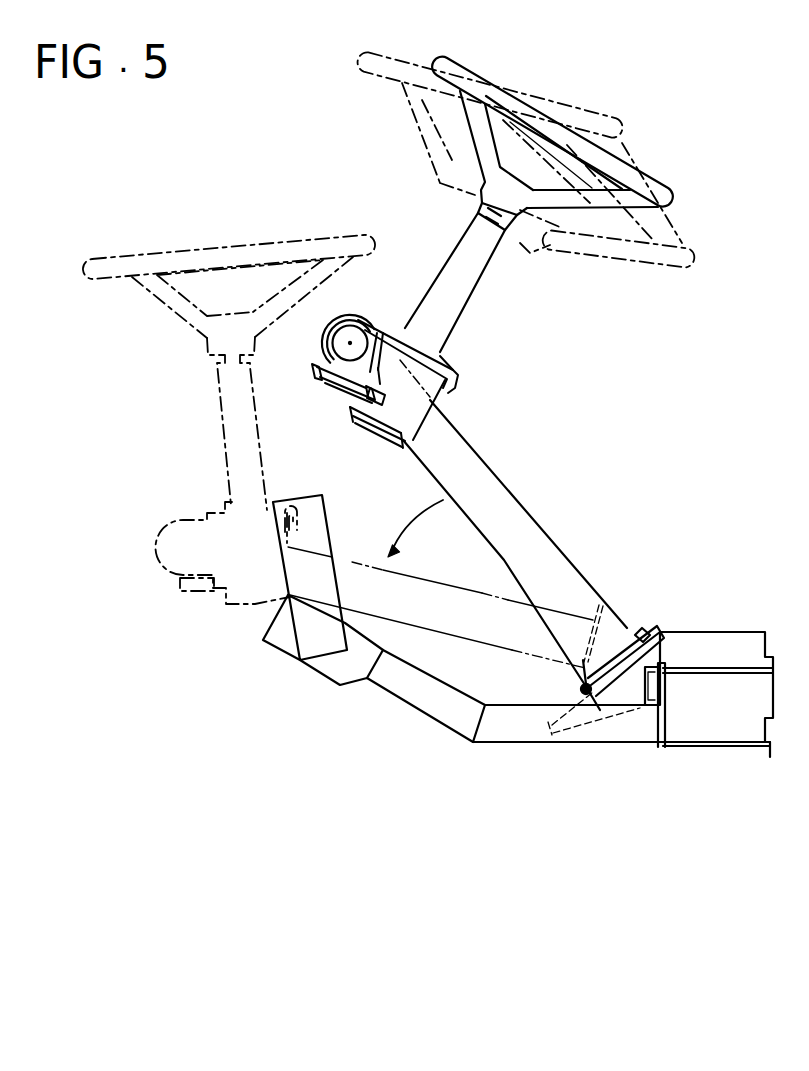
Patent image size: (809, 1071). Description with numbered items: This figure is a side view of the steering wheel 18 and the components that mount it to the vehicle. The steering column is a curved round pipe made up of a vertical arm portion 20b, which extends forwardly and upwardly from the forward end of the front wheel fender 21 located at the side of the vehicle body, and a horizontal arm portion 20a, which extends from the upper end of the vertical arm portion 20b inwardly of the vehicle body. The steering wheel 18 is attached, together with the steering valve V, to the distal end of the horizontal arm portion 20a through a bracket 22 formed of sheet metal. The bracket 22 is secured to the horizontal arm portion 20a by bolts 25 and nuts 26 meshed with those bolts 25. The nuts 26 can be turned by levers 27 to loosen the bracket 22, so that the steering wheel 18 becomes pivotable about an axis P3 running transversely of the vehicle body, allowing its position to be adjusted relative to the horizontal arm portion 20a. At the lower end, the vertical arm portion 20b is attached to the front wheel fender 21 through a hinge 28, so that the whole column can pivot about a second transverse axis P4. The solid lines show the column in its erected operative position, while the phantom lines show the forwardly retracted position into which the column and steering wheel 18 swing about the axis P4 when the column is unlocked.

The steering wheel 18 is at (670, 188).
The horizontal arm portion 20a is at (351, 326).
The vertical arm portion 20b is at (534, 512).
The front wheel fender 21 is at (741, 630).
The bracket 22 is at (452, 367).
The bolts 25 is at (393, 330).
The nuts 26 is at (353, 408).
The levers 27 is at (340, 391).
The hinge 28 is at (621, 635).
The axis P3 is at (348, 344).
The axis P4 is at (589, 695).
The steering valve V is at (423, 417).